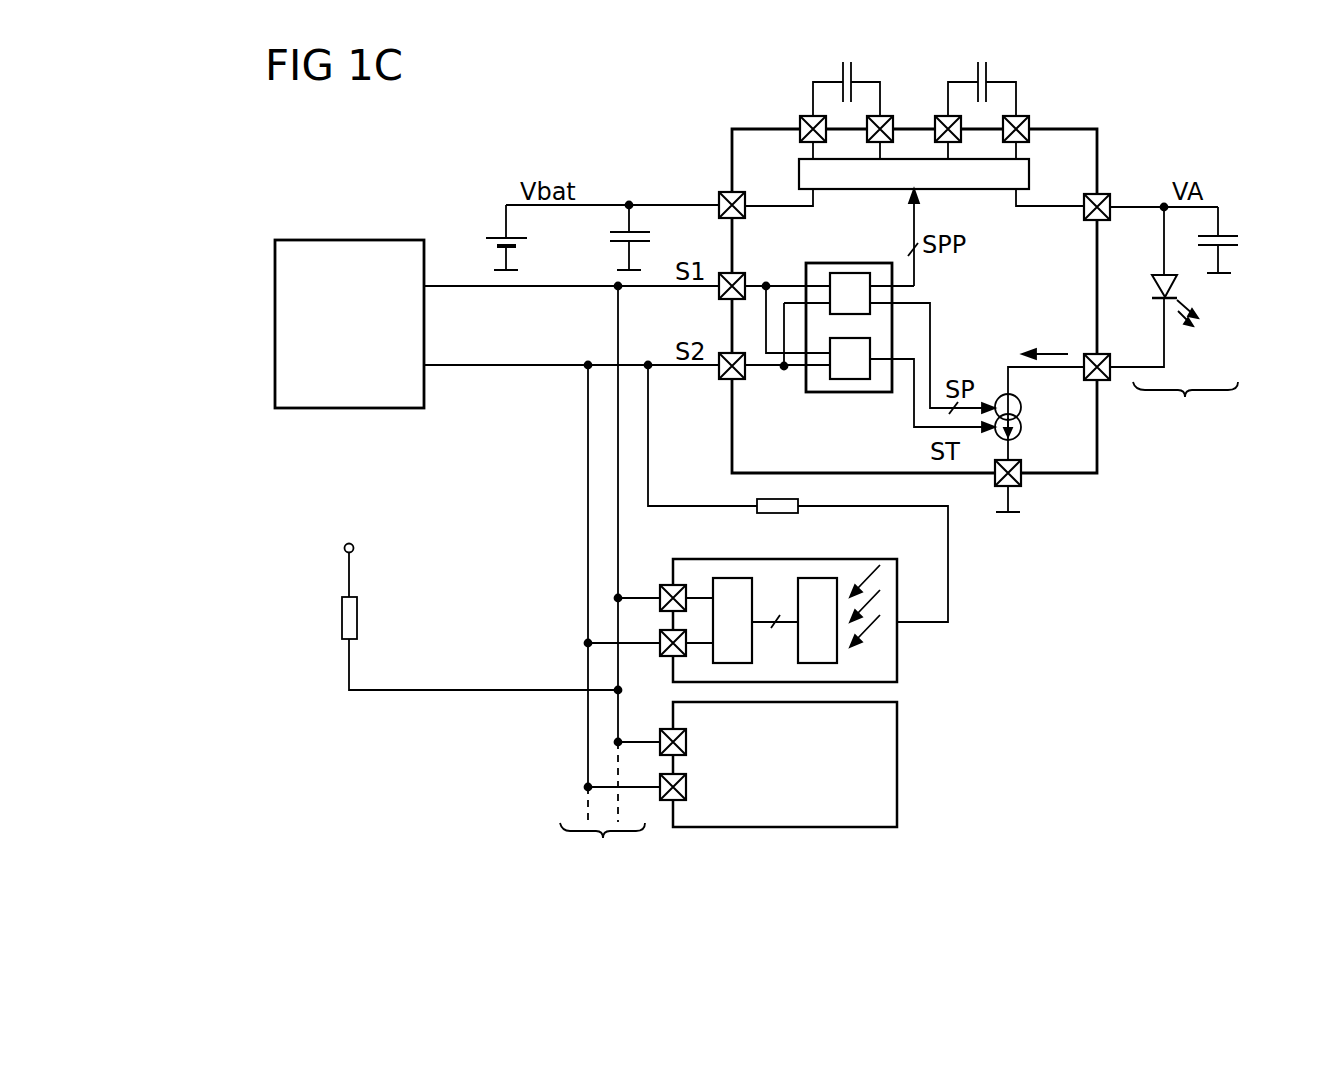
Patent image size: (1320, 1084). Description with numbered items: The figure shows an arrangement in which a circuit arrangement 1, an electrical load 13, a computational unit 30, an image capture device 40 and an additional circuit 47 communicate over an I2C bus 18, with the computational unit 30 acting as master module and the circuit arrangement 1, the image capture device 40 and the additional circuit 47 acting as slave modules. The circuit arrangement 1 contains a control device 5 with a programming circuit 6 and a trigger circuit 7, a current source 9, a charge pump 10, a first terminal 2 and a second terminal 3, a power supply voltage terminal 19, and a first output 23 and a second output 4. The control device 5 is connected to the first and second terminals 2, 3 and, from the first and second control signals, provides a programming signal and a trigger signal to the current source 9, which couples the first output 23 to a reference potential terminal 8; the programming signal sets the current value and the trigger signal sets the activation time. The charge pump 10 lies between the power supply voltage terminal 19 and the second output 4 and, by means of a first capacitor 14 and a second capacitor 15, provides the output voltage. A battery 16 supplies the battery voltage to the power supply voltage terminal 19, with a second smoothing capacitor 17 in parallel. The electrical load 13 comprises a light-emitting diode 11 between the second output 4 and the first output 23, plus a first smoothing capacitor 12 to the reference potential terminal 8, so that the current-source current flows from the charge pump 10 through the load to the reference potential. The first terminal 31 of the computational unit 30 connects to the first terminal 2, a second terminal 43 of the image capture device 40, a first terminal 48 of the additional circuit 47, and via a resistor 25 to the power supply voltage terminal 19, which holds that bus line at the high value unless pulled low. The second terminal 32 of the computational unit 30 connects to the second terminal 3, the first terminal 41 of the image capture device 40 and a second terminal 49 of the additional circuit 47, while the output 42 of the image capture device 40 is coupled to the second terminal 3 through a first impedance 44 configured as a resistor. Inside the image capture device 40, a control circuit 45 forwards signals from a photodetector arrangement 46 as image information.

The circuit arrangement 1 is at (1063, 476).
The first terminal 2 is at (741, 273).
The second terminal 3 is at (735, 381).
The second output 4 is at (1103, 193).
The control device 5 is at (823, 393).
The programming circuit 6 is at (850, 272).
The trigger circuit 7 is at (851, 393).
The reference potential terminal 8 is at (496, 266).
The current source 9 is at (1022, 428).
The charge pump 10 is at (1029, 176).
The light-emitting diode 11 is at (1153, 291).
The first smoothing capacitor 12 is at (1240, 241).
The electrical load 13 is at (1185, 406).
The first capacitor 14 is at (842, 72).
The second capacitor 15 is at (977, 72).
The battery 16 is at (500, 236).
The second smoothing capacitor 17 is at (652, 240).
The I2C bus 18 is at (602, 579).
The power supply voltage terminal 19 is at (731, 193).
The first output 23 is at (1094, 354).
The resistor 25 is at (358, 621).
The computational unit 30 is at (350, 238).
The first terminal 31 is at (428, 290).
The second terminal 32 is at (428, 368).
The image capture device 40 is at (898, 656).
The first terminal 41 is at (666, 657).
The output 42 is at (898, 618).
The second terminal 43 is at (667, 585).
The first impedance 44 is at (800, 504).
The control circuit 45 is at (732, 578).
The photodetector arrangement 46 is at (818, 578).
The additional circuit 47 is at (898, 769).
The first terminal 48 is at (688, 742).
The second terminal 49 is at (688, 787).